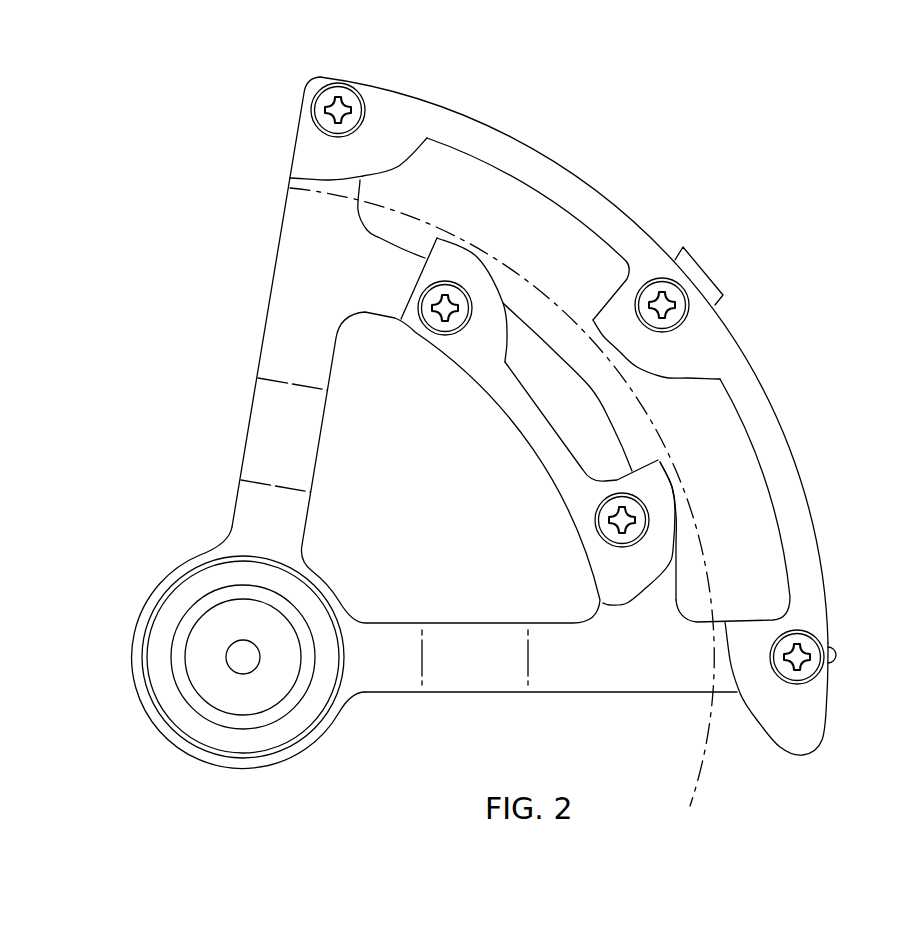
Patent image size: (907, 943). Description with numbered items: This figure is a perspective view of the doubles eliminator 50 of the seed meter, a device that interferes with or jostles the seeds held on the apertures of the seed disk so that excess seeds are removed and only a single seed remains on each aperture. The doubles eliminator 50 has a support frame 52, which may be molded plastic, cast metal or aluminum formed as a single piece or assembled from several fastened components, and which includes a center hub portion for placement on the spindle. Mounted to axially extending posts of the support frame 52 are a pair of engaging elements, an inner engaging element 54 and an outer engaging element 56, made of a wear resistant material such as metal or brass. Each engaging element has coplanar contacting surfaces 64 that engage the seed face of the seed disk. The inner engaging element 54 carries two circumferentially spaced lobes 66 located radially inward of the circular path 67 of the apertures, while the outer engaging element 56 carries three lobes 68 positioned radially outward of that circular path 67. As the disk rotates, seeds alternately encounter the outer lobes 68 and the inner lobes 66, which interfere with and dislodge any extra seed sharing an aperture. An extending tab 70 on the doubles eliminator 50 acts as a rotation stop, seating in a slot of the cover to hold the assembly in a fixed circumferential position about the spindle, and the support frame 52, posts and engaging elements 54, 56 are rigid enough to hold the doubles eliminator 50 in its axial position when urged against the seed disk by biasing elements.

The doubles eliminator 50 is at (742, 135).
The support frame 52 is at (250, 427).
The inner engaging element 54 is at (543, 422).
The outer engaging element 56 is at (763, 417).
The coplanar contacting surfaces 64 is at (492, 365).
The lobes 66 is at (468, 272).
The circular path 67 is at (283, 187).
The lobes 68 is at (373, 142).
The extending tab 70 is at (698, 257).